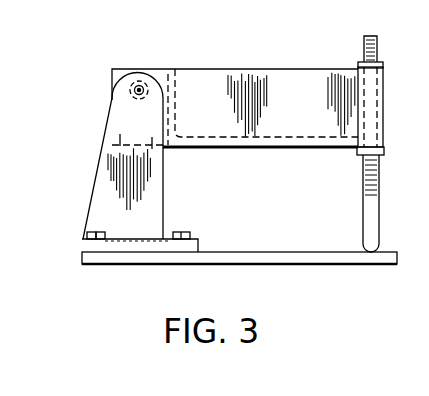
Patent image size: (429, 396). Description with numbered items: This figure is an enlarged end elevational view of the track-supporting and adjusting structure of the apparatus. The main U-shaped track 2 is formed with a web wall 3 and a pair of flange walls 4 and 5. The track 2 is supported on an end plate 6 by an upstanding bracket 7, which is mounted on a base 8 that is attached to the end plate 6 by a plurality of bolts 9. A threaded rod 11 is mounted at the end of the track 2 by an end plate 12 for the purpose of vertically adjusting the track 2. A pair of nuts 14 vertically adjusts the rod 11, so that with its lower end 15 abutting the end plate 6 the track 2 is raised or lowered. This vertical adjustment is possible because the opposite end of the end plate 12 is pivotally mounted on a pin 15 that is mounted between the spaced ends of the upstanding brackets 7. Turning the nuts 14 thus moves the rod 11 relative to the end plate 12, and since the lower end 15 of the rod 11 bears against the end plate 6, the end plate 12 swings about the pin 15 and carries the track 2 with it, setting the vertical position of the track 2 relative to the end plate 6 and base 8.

The main U-shaped track 2 is at (246, 62).
The web wall 3 is at (279, 151).
The flange wall 4 is at (384, 105).
The flange wall 5 is at (177, 100).
The end plate 6 is at (277, 267).
The upstanding bracket 7 is at (100, 197).
The base 8 is at (103, 247).
The bolts 9 is at (180, 232).
The threaded rod 11 is at (373, 207).
The end plate 12 is at (303, 109).
The nuts 14 is at (358, 64).
The lower end / pin 15 is at (140, 87).